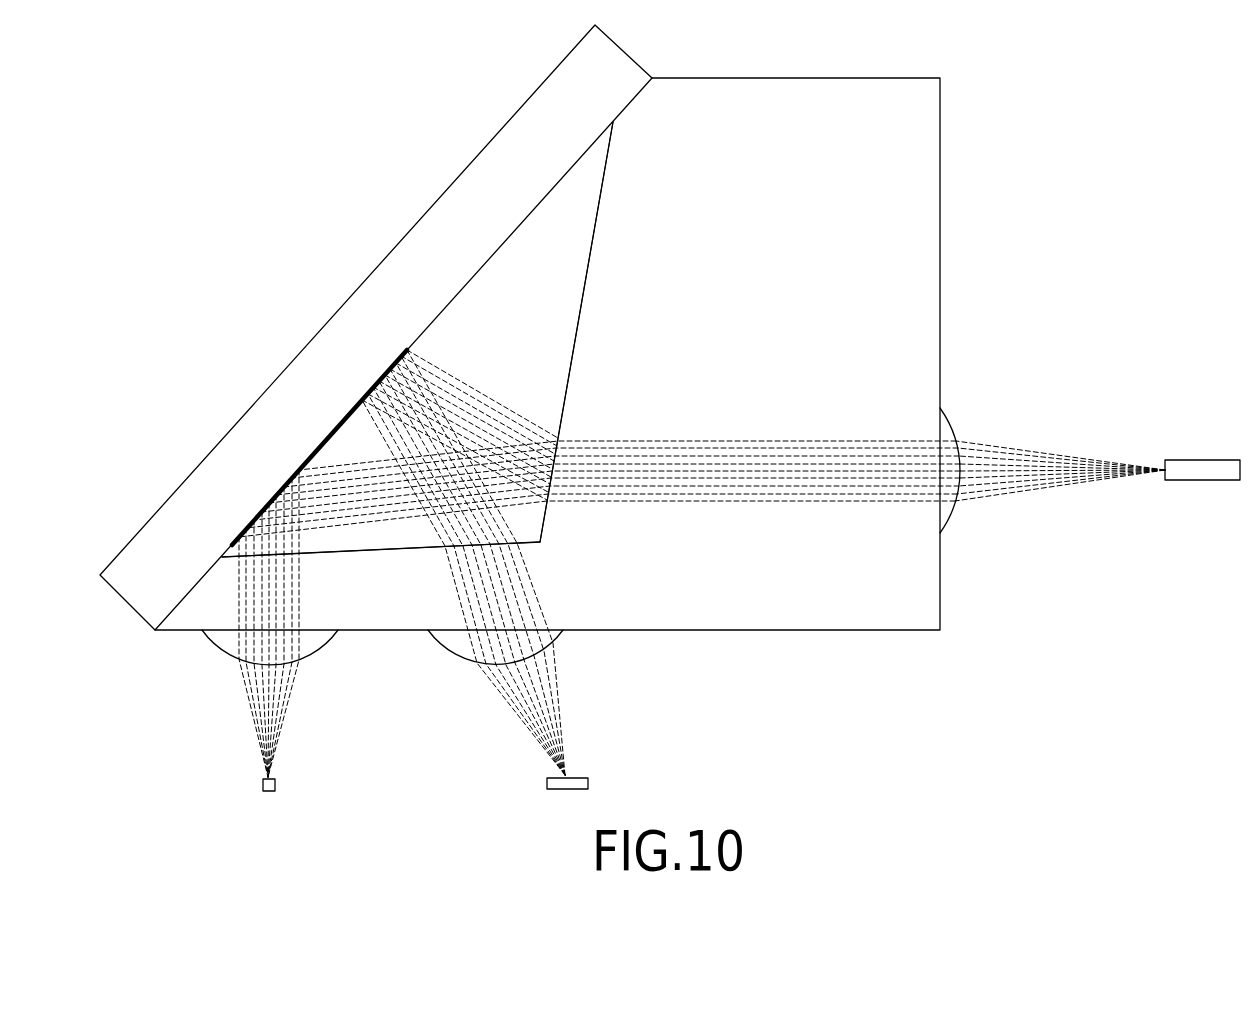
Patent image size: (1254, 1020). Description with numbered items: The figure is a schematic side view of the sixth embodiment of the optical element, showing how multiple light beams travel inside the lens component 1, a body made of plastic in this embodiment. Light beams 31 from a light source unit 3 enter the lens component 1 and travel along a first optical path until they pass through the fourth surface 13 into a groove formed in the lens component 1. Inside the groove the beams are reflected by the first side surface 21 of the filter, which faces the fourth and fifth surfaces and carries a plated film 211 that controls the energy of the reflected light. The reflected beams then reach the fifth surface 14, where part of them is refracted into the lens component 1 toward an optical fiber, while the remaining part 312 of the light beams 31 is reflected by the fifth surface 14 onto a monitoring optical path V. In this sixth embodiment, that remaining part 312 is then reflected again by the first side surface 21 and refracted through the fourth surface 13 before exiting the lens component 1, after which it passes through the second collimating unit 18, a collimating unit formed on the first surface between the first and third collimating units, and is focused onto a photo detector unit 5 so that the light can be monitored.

The lens component 1 is at (803, 662).
The first side surface 21 is at (523, 223).
The plated film 211 is at (317, 448).
The fifth surface 14 is at (600, 192).
The fourth surface 13 is at (383, 548).
The monitoring optical path V is at (462, 386).
The remaining part of the light beams 312 is at (493, 410).
The second collimating unit 18 is at (467, 648).
The light beams 31 is at (242, 692).
The light source unit 3 is at (275, 783).
The photo detector unit 5 is at (577, 782).